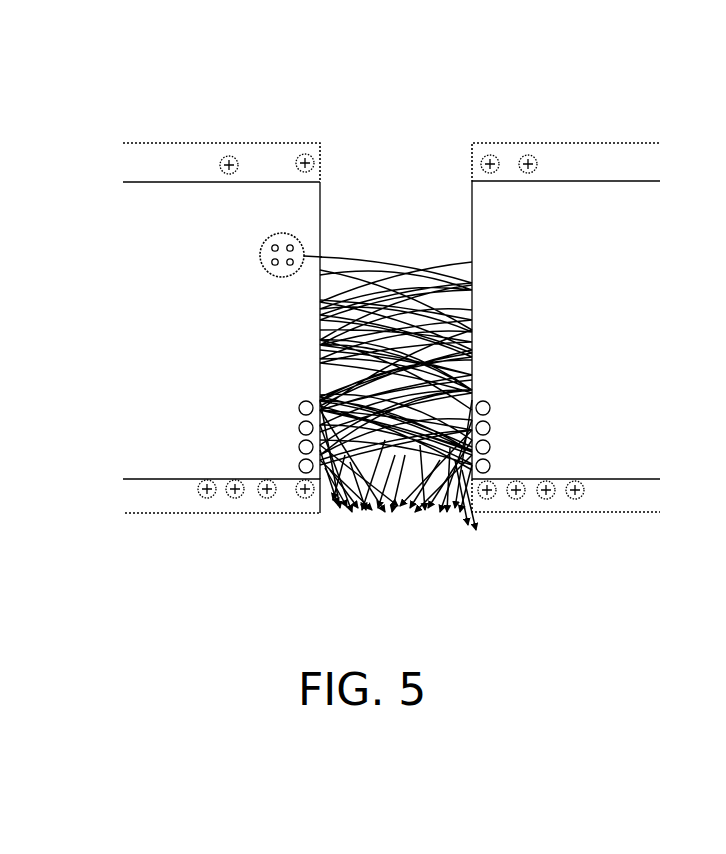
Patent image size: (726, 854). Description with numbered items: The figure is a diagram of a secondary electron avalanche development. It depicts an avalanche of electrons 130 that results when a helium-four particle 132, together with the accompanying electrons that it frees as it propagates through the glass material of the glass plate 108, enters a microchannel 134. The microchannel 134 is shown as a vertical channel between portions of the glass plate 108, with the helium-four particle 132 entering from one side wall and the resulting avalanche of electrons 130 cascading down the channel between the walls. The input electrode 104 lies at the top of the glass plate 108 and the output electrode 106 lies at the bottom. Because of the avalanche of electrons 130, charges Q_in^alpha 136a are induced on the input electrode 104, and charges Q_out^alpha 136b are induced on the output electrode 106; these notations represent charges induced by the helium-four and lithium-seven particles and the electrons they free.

The input electrode 104 is at (611, 158).
The output electrode 106 is at (620, 502).
The glass plate 108 is at (605, 245).
The avalanche of electrons 130 is at (402, 528).
The helium-4 particle 132 is at (262, 272).
The microchannel 134 is at (413, 172).
The charges Q_in^alpha 136a is at (262, 125).
The charges Q_out^alpha 136b is at (255, 538).